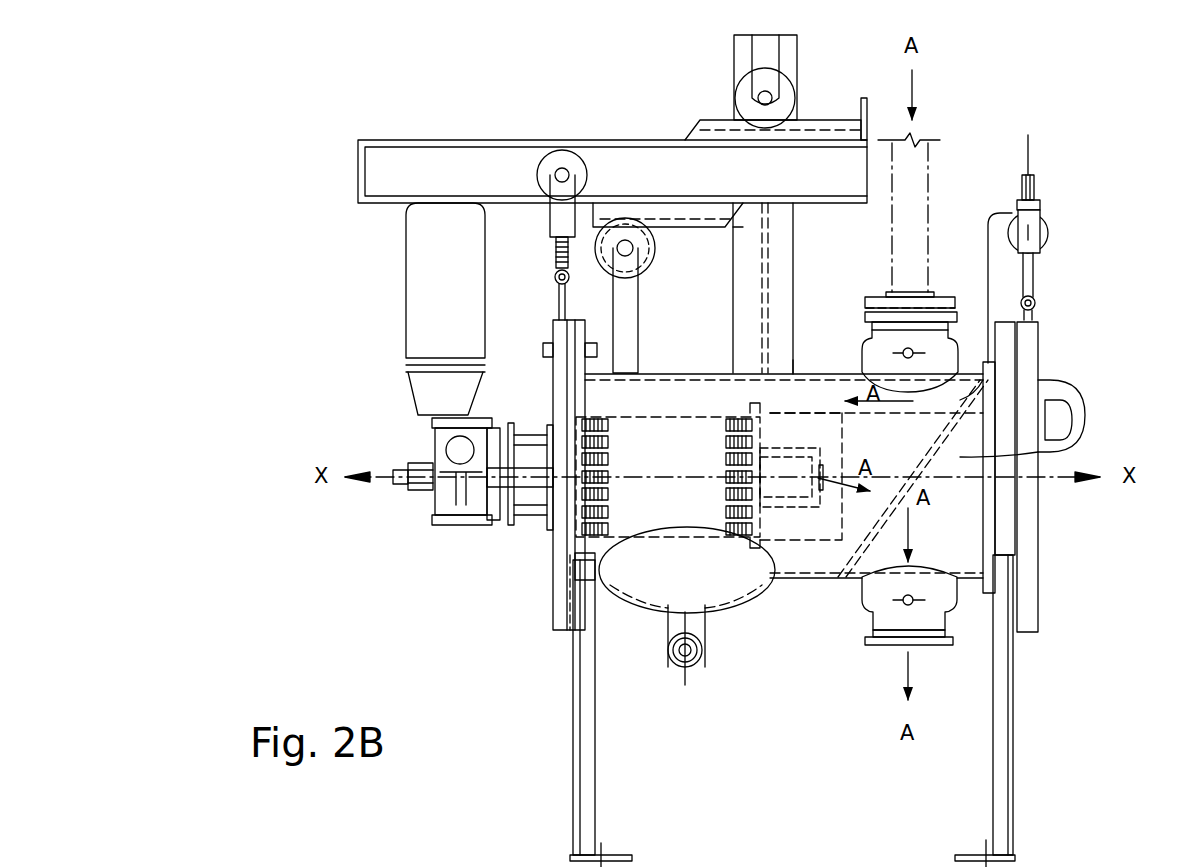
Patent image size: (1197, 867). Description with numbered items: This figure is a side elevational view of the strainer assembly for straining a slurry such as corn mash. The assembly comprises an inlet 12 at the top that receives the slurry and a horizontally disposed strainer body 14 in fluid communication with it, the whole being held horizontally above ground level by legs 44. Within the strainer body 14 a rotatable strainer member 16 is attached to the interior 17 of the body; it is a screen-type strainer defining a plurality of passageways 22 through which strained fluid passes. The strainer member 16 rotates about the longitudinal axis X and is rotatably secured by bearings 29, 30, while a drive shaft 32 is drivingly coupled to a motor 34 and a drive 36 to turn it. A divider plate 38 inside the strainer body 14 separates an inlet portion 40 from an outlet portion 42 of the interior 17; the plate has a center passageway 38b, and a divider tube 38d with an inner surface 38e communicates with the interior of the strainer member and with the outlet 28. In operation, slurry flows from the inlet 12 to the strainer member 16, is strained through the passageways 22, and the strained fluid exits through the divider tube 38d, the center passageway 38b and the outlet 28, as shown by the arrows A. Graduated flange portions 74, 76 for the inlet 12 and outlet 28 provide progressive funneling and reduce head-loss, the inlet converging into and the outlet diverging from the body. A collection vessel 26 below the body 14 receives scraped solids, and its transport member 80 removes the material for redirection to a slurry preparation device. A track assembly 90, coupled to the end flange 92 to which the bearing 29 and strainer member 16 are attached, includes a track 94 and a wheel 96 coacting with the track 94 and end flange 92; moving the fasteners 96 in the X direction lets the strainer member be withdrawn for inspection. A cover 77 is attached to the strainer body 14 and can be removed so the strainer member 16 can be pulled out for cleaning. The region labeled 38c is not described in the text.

The inlet 12 is at (935, 300).
The strainer body 14 is at (1038, 540).
The strainer member 16 is at (735, 420).
The interior 17 is at (825, 398).
The passageways 22 is at (585, 410).
The collection vessel 26 is at (697, 587).
The outlet 28 is at (873, 645).
The bearing 29 is at (550, 535).
The bearing 30 is at (797, 488).
The drive shaft 32 is at (510, 528).
The motor 34 is at (442, 310).
The drive 36 is at (442, 518).
The divider plate 38 is at (1000, 415).
The center passageway 38b is at (1045, 450).
The housing wall 38c is at (948, 400).
The divider tube 38d is at (798, 374).
The inner surface 38e is at (808, 418).
The inlet portion 40 is at (686, 410).
The outlet portion 42 is at (948, 537).
The legs 44 is at (584, 740).
The graduated flange portion 74 is at (884, 366).
The graduated flange portion 76 is at (935, 585).
The cover 77 is at (1025, 377).
The transport member 80 is at (690, 655).
The track assembly 90 is at (607, 140).
The end flange 92 is at (562, 332).
The track 94 is at (385, 140).
The wheel 96 is at (548, 158).